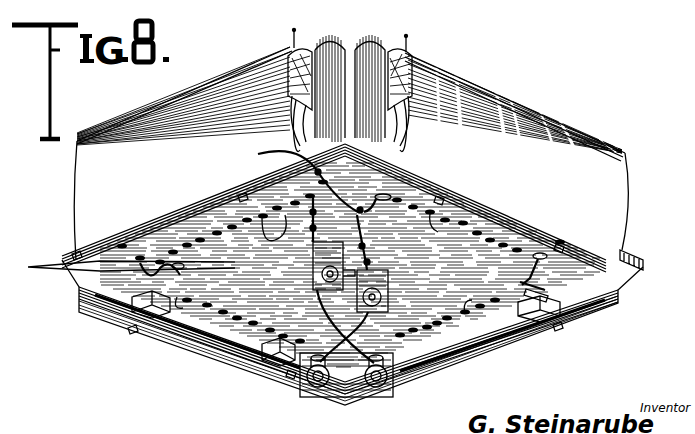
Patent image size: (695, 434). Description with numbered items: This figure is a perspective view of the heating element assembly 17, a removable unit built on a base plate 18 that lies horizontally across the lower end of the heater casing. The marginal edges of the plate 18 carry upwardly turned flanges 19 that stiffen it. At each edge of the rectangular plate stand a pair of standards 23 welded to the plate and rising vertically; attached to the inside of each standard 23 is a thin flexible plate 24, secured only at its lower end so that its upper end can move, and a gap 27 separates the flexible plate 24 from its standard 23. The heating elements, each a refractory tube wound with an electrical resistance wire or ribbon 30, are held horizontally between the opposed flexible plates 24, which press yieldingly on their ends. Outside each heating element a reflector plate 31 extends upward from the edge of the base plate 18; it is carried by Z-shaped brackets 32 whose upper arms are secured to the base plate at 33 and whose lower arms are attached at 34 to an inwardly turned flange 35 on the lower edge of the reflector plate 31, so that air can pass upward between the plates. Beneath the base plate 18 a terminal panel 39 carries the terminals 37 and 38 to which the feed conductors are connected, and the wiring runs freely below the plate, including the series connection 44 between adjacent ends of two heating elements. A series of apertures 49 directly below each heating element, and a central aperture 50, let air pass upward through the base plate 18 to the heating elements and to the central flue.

The heating element assembly 17 is at (630, 256).
The base plate 18 is at (300, 220).
The upwardly turned flanges 19 is at (296, 152).
The standards 23 is at (353, 90).
The flexible plate 24 is at (283, 68).
The space between flexible plate and standard 27 is at (292, 50).
The electrical resistance wire or ribbon 30 is at (182, 270).
The reflector plate 31 is at (165, 120).
The brackets 32 is at (170, 330).
The attachment of bracket upper arm to base plate 33 is at (550, 294).
The attachment of bracket lower arm to flange 34 is at (75, 256).
The laterally inwardly turned flange 35 is at (158, 226).
The terminal 37 is at (324, 388).
The terminal 38 is at (378, 388).
The terminal panel 39 is at (346, 398).
The connection 44 is at (571, 292).
The apertures 49 is at (328, 269).
The central aperture 50 is at (370, 272).